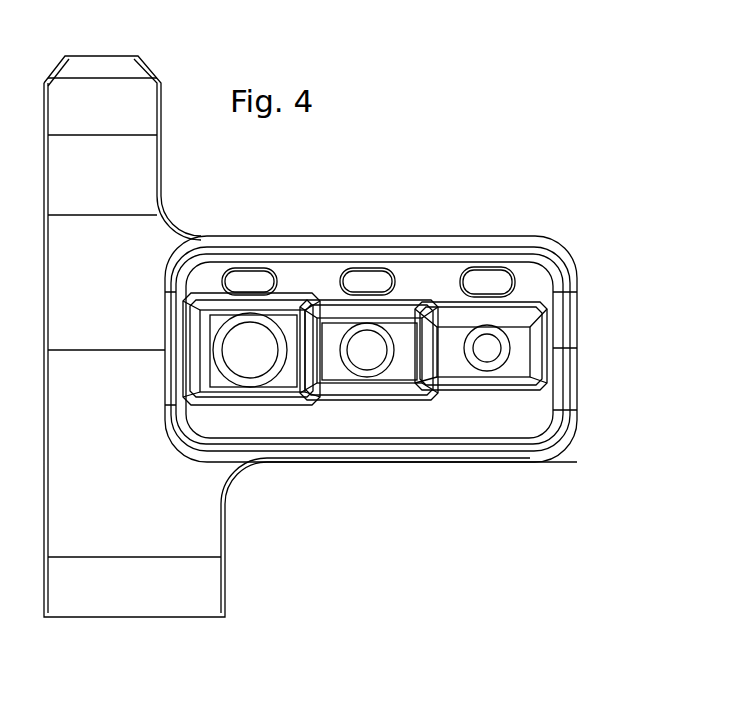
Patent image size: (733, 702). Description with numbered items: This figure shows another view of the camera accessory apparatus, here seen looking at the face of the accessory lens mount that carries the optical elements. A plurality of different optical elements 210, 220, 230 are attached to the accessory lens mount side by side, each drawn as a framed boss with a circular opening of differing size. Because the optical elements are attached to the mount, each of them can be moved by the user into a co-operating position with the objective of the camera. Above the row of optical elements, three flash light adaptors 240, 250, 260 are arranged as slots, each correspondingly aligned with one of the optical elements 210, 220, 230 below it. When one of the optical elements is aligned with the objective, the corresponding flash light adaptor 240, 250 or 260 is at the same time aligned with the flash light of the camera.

The optical element 210 is at (272, 395).
The optical element 220 is at (380, 387).
The optical element 230 is at (500, 383).
The flash light adaptor 240 is at (250, 270).
The flash light adaptor 250 is at (365, 270).
The flash light adaptor 260 is at (487, 270).